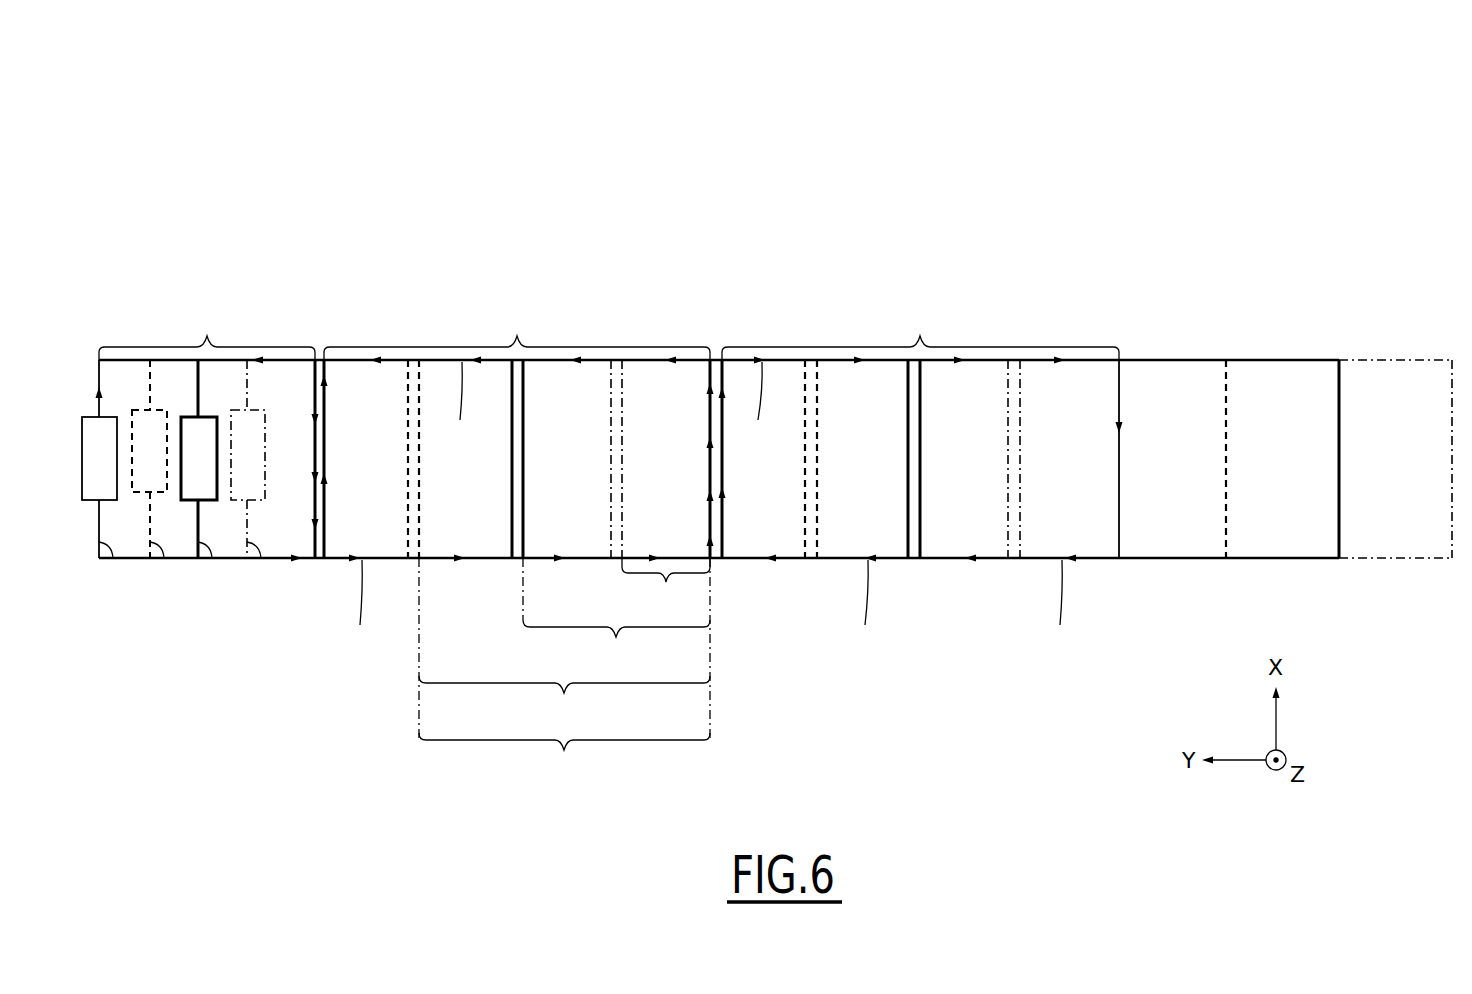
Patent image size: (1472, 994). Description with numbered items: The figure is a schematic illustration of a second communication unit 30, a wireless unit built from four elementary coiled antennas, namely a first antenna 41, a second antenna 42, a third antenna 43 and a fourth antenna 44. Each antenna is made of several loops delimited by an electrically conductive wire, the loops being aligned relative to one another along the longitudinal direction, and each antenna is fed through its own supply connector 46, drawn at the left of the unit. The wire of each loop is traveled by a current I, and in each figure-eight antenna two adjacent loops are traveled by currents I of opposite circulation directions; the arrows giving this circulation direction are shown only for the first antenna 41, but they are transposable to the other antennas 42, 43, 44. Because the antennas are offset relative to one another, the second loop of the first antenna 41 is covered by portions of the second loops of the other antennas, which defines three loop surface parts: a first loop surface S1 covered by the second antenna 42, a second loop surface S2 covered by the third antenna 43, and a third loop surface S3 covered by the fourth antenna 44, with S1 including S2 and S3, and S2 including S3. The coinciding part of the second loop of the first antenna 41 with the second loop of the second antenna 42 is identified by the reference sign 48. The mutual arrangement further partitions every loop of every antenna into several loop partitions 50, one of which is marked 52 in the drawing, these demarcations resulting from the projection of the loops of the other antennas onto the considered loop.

The second communication unit 30 is at (952, 150).
The first antenna 41 is at (113, 478).
The second antenna 42 is at (160, 470).
The third antenna 43 is at (213, 478).
The fourth antenna 44 is at (262, 478).
The supply connector 46 is at (104, 548).
The coinciding part 48 is at (564, 757).
The loop partition 50 is at (132, 396).
The cell 52 is at (775, 498).
The first loop surface S1 is at (564, 649).
The second loop surface S2 is at (616, 649).
The third loop surface S3 is at (666, 585).
The current I is at (258, 358).